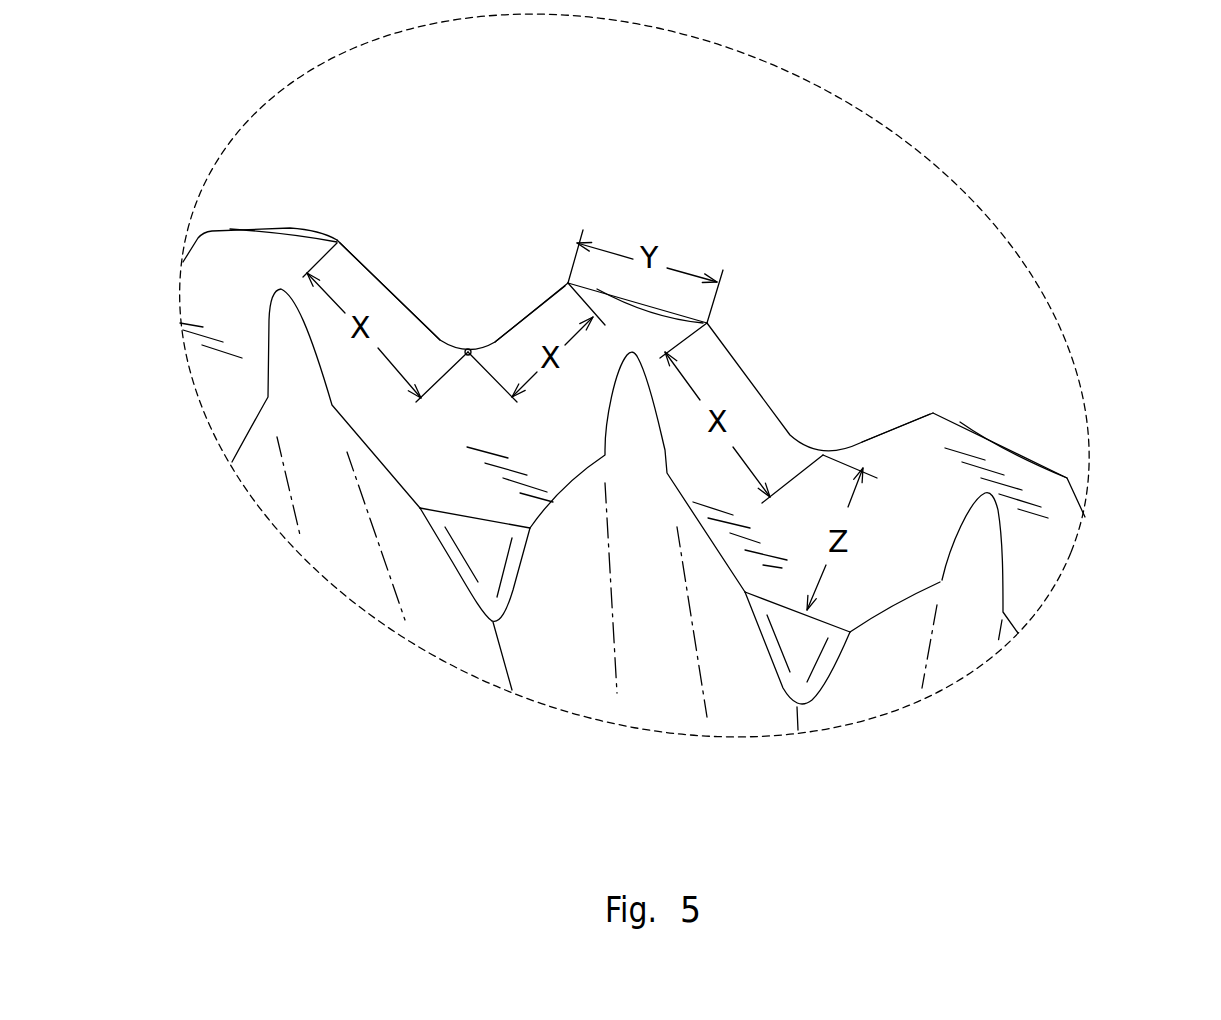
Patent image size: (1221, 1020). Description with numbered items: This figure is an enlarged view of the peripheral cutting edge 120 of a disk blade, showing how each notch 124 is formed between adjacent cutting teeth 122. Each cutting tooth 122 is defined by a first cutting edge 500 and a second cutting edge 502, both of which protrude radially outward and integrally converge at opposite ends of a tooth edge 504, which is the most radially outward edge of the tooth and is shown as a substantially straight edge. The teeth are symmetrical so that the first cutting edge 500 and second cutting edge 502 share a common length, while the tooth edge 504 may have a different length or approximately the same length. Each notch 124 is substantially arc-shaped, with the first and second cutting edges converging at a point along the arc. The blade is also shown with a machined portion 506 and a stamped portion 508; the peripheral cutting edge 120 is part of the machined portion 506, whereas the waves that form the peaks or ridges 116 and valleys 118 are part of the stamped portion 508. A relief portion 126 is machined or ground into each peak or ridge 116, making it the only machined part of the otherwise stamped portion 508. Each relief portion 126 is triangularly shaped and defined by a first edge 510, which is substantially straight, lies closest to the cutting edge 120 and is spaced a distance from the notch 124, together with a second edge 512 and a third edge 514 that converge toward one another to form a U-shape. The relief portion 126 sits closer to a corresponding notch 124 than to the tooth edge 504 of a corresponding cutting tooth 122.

The peak or ridge 116 is at (498, 656).
The valley 118 is at (343, 545).
The peripheral cutting edge 120 is at (288, 210).
The cutting tooth 122 is at (1018, 467).
The notch 124 is at (466, 338).
The relief portion 126 is at (803, 667).
The first cutting edge 500 is at (378, 268).
The second cutting edge 502 is at (531, 294).
The tooth edge 504 is at (647, 302).
The machined portion 506 is at (905, 463).
The stamped portion 508 is at (257, 472).
The first edge 510 is at (822, 620).
The second edge 512 is at (772, 657).
The third edge 514 is at (842, 653).